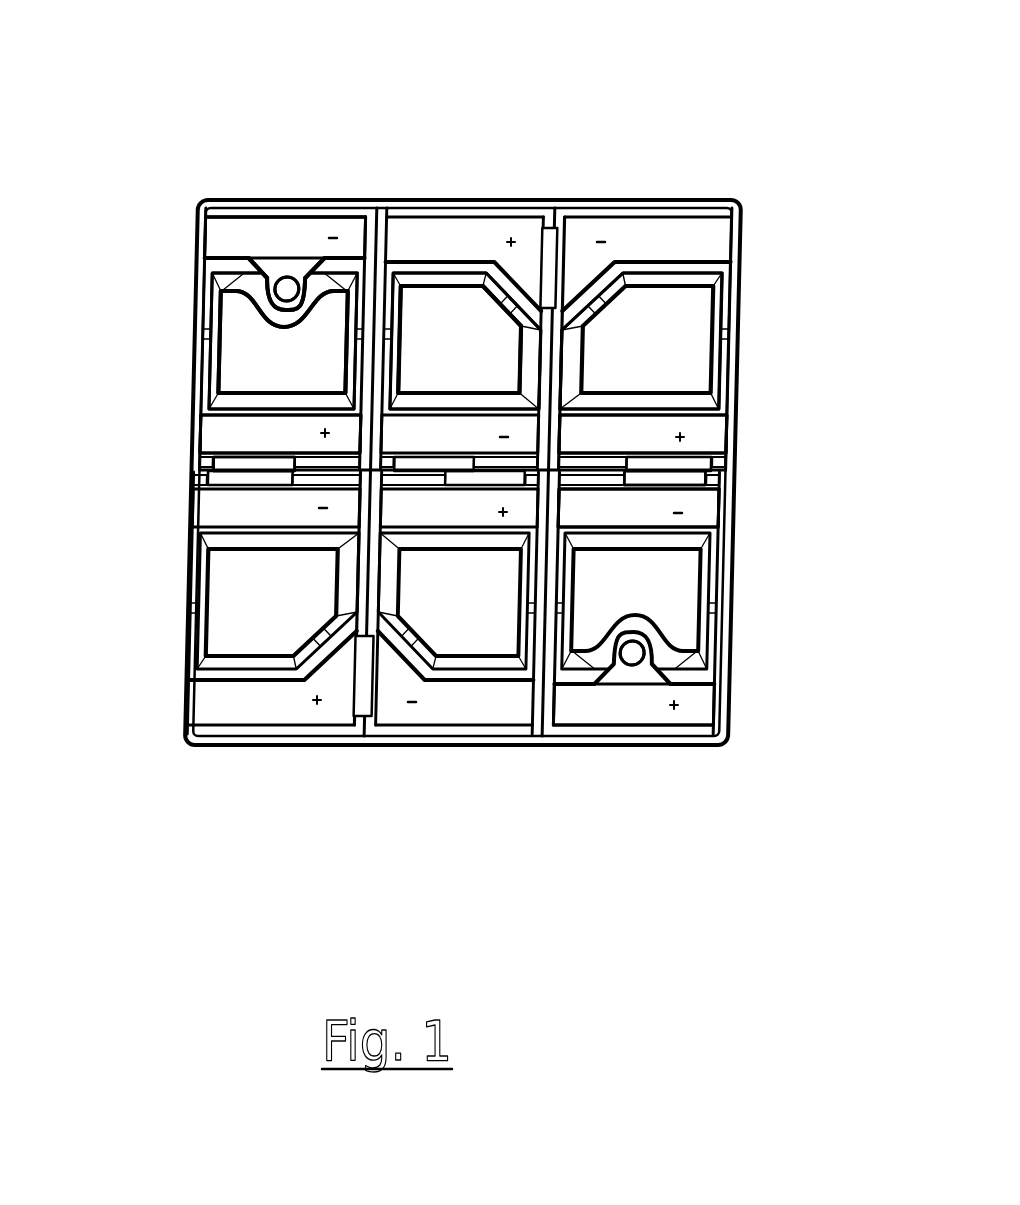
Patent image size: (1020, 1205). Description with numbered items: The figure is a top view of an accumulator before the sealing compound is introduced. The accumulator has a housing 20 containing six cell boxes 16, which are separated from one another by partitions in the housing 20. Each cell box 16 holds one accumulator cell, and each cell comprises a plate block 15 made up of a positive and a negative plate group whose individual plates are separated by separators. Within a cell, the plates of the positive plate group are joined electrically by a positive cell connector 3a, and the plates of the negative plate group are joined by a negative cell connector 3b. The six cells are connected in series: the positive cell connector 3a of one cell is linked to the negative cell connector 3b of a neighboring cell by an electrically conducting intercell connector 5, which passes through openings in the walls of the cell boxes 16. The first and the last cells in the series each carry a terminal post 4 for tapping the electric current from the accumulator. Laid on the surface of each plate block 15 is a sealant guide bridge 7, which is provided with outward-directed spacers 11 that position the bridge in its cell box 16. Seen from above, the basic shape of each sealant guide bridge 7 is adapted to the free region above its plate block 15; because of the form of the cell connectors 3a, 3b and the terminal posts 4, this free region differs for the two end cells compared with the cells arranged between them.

The positive cell connector 3a is at (213, 437).
The negative cell connector 3b is at (222, 232).
The terminal post 4 is at (288, 286).
The intercell connector 5 is at (565, 245).
The sealant guide bridge 7 is at (443, 277).
The spacer 11 is at (421, 258).
The plate block 15 is at (238, 330).
The cell box 16 is at (334, 212).
The housing 20 is at (515, 199).